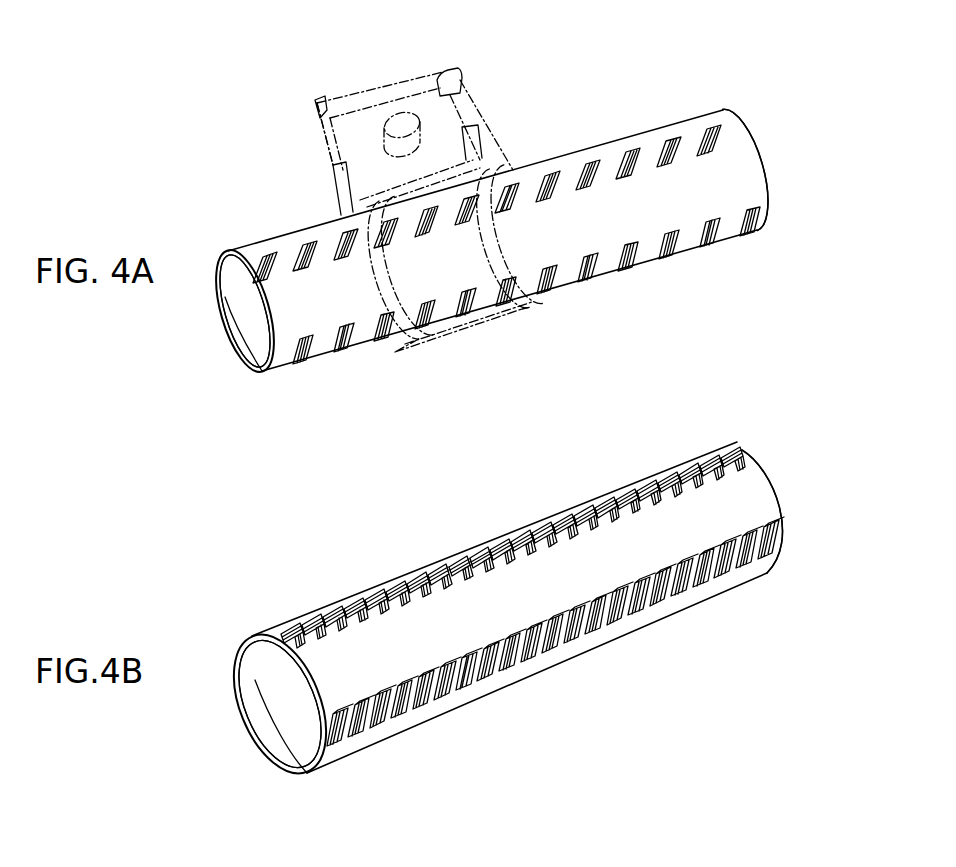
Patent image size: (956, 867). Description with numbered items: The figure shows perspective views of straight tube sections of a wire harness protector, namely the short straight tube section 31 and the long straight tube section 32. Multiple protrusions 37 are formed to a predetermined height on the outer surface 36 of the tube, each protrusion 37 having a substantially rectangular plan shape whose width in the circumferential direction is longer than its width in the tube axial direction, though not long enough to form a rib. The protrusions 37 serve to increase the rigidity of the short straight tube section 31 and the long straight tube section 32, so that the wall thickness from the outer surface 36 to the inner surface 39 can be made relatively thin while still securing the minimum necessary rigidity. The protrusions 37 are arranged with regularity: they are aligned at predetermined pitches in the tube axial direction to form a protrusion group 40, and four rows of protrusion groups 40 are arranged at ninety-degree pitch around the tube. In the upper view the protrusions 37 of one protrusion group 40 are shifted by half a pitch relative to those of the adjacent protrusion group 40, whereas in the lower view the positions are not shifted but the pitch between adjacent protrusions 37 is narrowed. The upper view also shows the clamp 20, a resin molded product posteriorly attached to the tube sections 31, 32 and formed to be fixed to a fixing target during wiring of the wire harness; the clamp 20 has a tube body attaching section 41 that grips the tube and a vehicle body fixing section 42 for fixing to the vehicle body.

In FIG. 4A, the clamp 20 is at (357, 92).
In FIG. 4A, the short straight tube section 31 is at (541, 243).
In FIG. 4B, the short straight tube section 31 is at (499, 596).
In FIG. 4A, the long straight tube section 32 is at (690, 190).
In FIG. 4B, the long straight tube section 32 is at (615, 552).
In FIG. 4A, the outer surface 36 is at (248, 338).
In FIG. 4B, the outer surface 36 is at (330, 675).
In FIG. 4A, the protrusion 37 is at (268, 255).
In FIG. 4B, the protrusion 37 is at (300, 622).
In FIG. 4A, the inner surface 39 is at (238, 300).
In FIG. 4B, the inner surface 39 is at (252, 702).
In FIG. 4A, the protrusion group 40 is at (702, 108).
In FIG. 4B, the protrusion group 40 is at (738, 445).
In FIG. 4A, the tube body attaching section 41 is at (520, 338).
In FIG. 4A, the vehicle body fixing section 42 is at (318, 140).